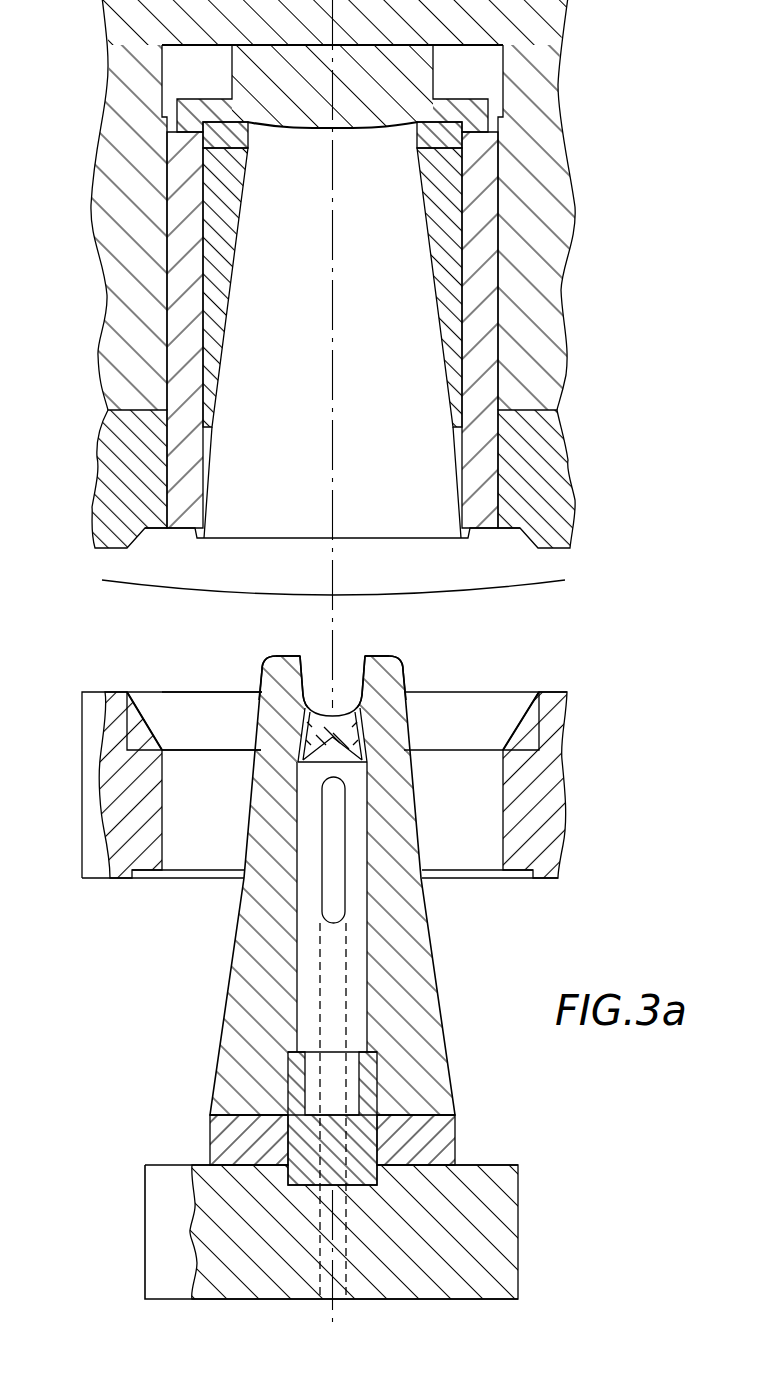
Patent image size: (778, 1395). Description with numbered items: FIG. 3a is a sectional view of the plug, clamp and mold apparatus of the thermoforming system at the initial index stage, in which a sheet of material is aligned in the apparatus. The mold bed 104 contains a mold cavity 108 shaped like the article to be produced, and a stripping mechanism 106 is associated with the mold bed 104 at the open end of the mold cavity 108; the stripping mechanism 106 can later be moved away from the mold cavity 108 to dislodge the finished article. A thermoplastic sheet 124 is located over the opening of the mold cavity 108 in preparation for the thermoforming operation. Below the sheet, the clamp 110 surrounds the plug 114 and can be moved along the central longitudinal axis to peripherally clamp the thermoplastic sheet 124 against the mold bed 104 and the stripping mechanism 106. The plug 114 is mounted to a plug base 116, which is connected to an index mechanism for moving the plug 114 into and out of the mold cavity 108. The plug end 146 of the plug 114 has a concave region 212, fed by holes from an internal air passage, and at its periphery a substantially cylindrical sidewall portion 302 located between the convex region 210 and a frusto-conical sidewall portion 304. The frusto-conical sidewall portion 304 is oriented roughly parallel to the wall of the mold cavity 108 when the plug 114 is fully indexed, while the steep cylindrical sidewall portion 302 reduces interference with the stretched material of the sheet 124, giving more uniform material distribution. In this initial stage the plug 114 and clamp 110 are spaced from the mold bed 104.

The mold bed 104 is at (98, 228).
The stripping mechanism 106 is at (105, 494).
The mold cavity 108 is at (390, 379).
The clamp 110 is at (553, 802).
The plug 114 is at (235, 985).
The plug base 116 is at (218, 1136).
The thermoplastic sheet 124 is at (561, 587).
The plug end 146 is at (238, 664).
The convex region 210 is at (383, 656).
The concave region 212 is at (320, 668).
The cylindrical sidewall portion 302 is at (416, 682).
The frusto-conical sidewall portion 304 is at (413, 812).